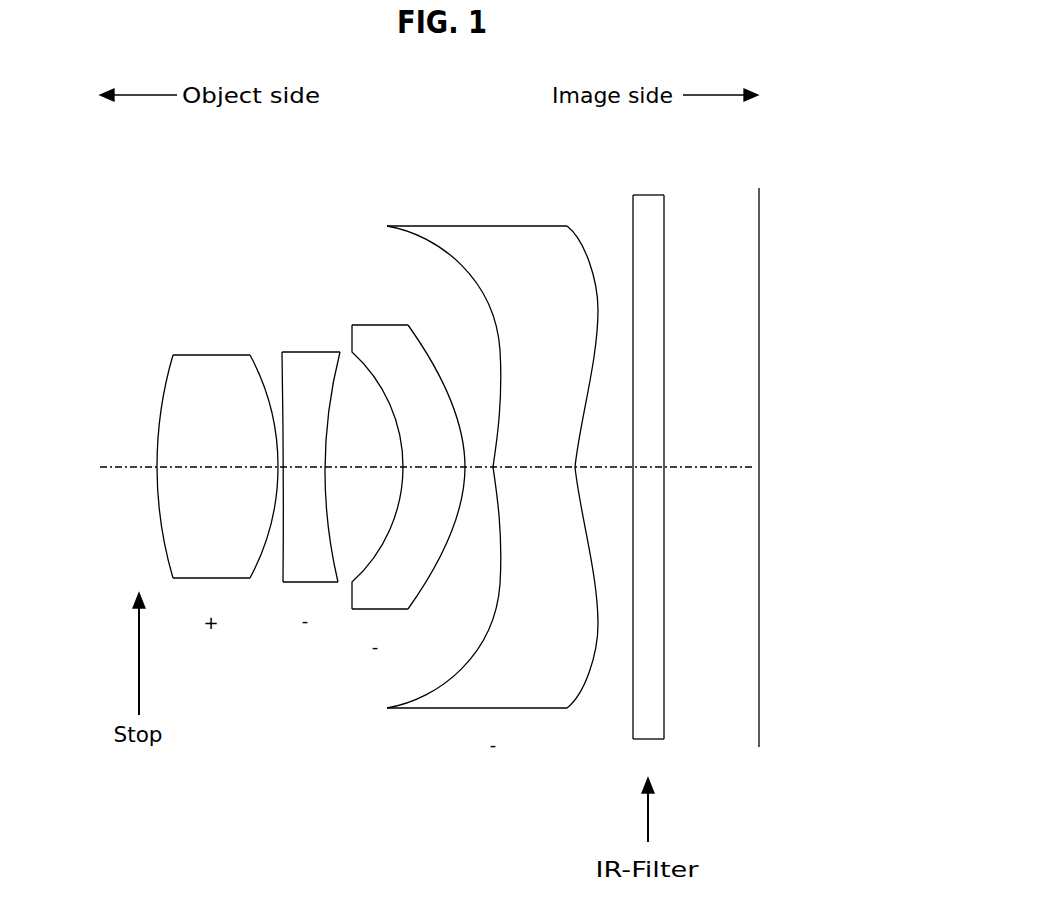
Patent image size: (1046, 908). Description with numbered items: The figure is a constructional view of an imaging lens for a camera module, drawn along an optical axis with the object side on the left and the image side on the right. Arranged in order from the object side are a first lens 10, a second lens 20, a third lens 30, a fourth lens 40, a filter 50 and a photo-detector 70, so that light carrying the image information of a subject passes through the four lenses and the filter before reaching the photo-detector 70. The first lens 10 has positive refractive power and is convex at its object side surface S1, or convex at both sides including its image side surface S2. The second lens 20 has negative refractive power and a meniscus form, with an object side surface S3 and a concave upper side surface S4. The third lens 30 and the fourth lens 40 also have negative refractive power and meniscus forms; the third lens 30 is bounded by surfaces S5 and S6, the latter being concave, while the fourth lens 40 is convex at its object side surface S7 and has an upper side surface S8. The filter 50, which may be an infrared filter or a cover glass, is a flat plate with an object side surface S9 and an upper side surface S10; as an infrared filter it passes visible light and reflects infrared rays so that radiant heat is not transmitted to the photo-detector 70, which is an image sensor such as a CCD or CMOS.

The first lens 10 is at (188, 471).
The second lens 20 is at (307, 488).
The third lens 30 is at (402, 457).
The fourth lens 40 is at (494, 462).
The filter 50 is at (657, 461).
The photo-detector 70 is at (760, 232).
The object side surface of the first lens S1 is at (162, 528).
The upper side surface of the first lens S2 is at (258, 572).
The object side surface of the second lens S3 is at (283, 584).
The upper side surface of the second lens S4 is at (337, 586).
The upper side surface of the third lens S5 is at (367, 567).
The upper side surface of the third lens S6 is at (430, 575).
The object side surface of the fourth lens S7 is at (483, 652).
The upper side surface of the fourth lens S8 is at (588, 685).
The object side surface of the filter S9 is at (632, 716).
The upper side surface of the filter S10 is at (664, 722).